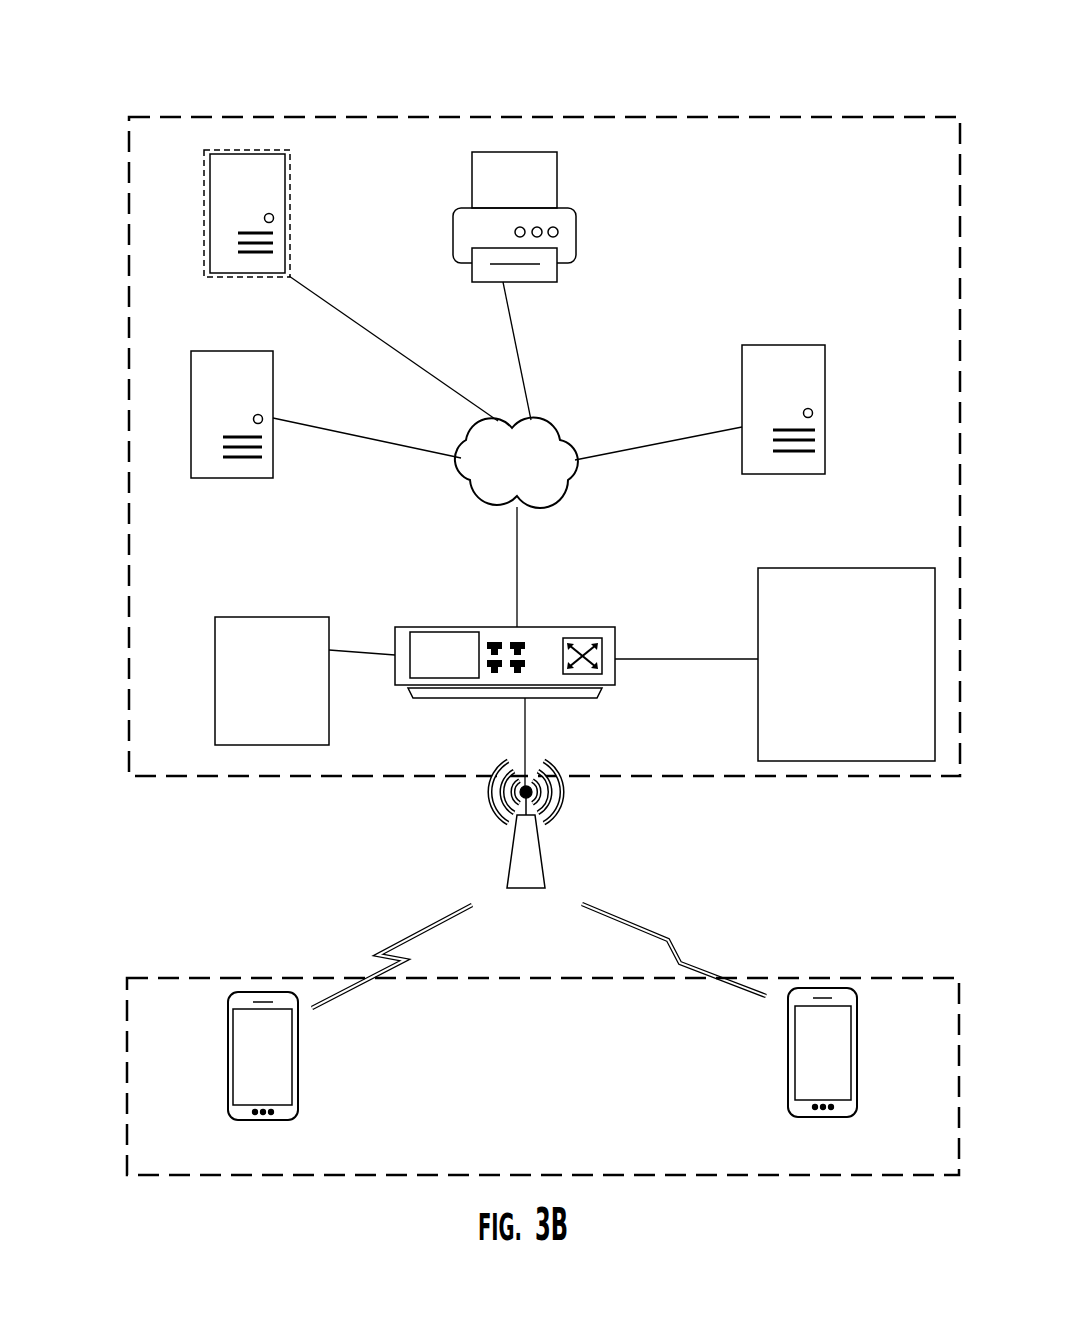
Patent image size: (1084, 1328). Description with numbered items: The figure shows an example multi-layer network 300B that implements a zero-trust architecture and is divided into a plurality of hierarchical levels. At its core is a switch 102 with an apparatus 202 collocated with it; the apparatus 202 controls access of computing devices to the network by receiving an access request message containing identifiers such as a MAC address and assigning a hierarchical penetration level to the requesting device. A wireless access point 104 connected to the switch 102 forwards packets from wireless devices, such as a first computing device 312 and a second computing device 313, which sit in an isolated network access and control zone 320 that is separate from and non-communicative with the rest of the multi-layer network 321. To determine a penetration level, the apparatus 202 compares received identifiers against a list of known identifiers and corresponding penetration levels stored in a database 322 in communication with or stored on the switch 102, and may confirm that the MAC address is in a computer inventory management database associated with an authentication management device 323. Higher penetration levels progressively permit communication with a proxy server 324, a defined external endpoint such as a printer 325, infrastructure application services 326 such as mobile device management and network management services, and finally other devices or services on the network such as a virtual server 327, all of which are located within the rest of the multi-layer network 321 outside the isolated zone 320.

The multi-layer network 300B is at (518, 82).
The rest of the multi-layer network 321 is at (128, 450).
The virtual server 327 is at (287, 213).
The printer 325 is at (576, 215).
The proxy server 324 is at (233, 478).
The infrastructure application services 326 is at (782, 474).
The apparatus 202 is at (444, 655).
The switch 102 is at (552, 692).
The database 322 is at (329, 745).
The authentication management device 323 is at (870, 761).
The wireless access point 104 is at (527, 888).
The isolated network access and control zone 320 is at (213, 977).
The first computing device 312 is at (262, 1121).
The second computing device 313 is at (822, 1118).